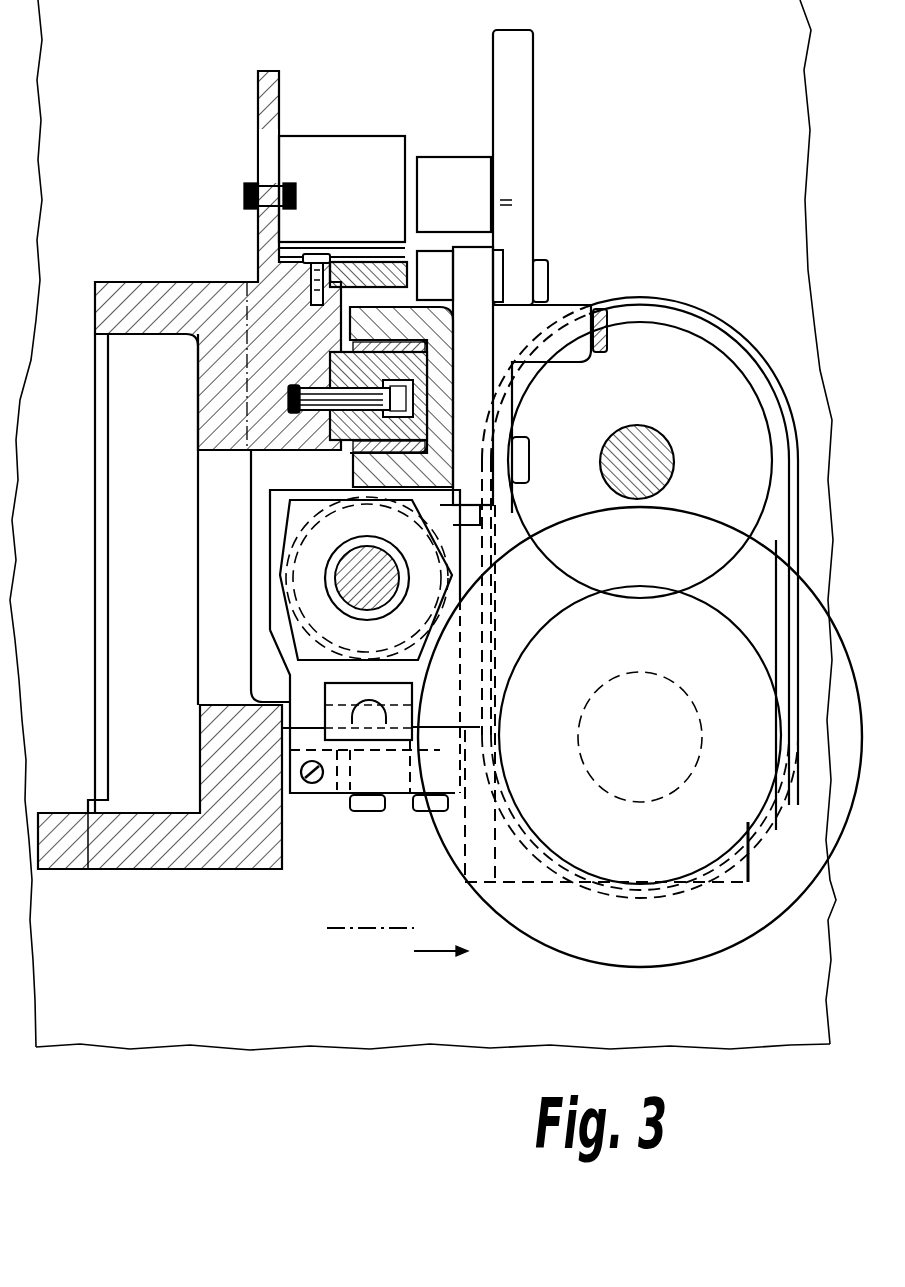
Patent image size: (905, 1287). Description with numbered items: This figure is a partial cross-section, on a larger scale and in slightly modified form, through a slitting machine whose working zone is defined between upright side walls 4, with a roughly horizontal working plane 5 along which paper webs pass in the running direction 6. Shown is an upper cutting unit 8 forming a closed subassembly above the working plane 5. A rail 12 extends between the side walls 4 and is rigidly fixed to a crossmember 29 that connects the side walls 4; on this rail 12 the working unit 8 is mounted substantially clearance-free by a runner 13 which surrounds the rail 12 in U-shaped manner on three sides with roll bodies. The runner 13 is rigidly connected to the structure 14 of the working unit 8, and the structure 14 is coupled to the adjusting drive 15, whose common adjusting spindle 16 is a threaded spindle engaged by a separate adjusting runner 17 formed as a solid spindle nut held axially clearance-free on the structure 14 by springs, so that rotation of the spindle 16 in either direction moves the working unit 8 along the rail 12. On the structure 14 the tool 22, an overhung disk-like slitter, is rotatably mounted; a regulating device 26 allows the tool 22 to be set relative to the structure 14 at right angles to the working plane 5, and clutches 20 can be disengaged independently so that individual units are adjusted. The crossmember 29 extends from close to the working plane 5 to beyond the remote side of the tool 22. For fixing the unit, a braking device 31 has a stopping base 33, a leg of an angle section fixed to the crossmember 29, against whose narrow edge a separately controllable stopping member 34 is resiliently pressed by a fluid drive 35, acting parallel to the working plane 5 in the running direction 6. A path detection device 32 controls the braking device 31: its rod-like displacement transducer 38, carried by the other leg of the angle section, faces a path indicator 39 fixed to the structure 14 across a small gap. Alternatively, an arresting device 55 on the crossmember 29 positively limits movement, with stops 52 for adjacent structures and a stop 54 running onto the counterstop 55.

The side walls 4 is at (174, 1050).
The working plane 5 is at (350, 892).
The running direction 6 is at (441, 967).
The upper cutting unit 8 is at (662, 132).
The rail 12 is at (328, 366).
The runner 13 is at (333, 436).
The structure 14 is at (521, 885).
The adjusting drive 15 is at (297, 640).
The adjusting spindle 16 is at (345, 570).
The adjusting runner 17 is at (288, 546).
The clutches 20 is at (289, 608).
The tool 22 is at (642, 966).
The regulating device 26 is at (470, 874).
The crossmember 29 is at (171, 289).
The braking device 31 is at (391, 238).
The path detection device 32 is at (415, 92).
The stopping base 33 is at (347, 256).
The stopping member 34 is at (408, 275).
The fluid drive 35 is at (450, 282).
The displacement transducer 38 is at (362, 150).
The path indicator 39 is at (449, 167).
The stop 52 is at (410, 710).
The stop 54 is at (315, 784).
The arresting device 55 is at (282, 775).